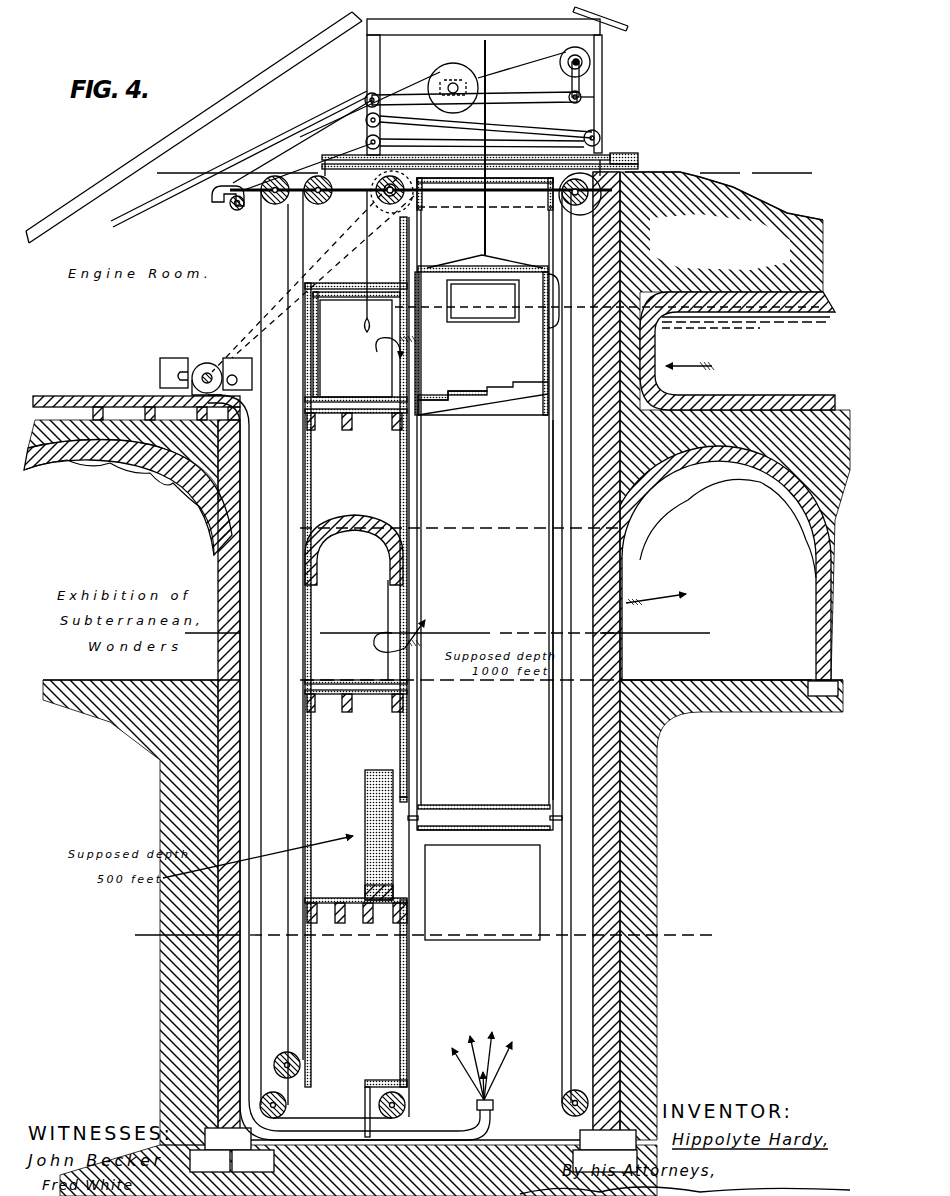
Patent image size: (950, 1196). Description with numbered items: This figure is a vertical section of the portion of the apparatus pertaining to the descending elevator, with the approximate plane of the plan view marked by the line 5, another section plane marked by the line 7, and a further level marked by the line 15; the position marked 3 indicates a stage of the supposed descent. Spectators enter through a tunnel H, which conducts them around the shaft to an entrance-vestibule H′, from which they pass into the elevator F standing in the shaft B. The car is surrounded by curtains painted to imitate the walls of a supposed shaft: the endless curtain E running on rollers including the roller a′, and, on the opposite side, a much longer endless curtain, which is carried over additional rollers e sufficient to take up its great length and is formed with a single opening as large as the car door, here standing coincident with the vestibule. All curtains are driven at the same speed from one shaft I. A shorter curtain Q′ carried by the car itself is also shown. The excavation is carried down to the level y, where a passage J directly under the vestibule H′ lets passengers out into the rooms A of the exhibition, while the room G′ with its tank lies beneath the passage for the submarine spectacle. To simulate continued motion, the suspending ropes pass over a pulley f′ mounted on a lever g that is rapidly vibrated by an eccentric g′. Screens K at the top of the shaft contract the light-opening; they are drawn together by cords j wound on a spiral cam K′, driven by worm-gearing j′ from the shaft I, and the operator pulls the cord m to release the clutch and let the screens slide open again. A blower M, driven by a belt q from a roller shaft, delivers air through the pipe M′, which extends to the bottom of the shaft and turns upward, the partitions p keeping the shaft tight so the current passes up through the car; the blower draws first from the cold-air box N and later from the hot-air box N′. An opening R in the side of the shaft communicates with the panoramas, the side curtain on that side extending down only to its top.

The rooms of the exhibition A is at (721, 656).
The tunnel H is at (737, 351).
The partitions or walls p is at (612, 978).
The section line 5 5 is at (484, 166).
The level line 7 is at (453, 632).
The level line 15 is at (420, 928).
The level y is at (717, 666).
The level line 3 is at (460, 641).
The pulley f′ is at (470, 80).
The lever g is at (471, 90).
The eccentric g′ is at (560, 62).
The worm-gearing j′ is at (479, 125).
The cords j is at (416, 131).
The screens K is at (392, 150).
The spiral winding-on cam K′ is at (232, 200).
The rollers e is at (332, 647).
The shaft I is at (380, 192).
The roller a′ is at (575, 1095).
The belt q is at (313, 275).
The cord or chain m is at (373, 261).
The entrance-vestibule H′ is at (360, 361).
The passage or vestibule J is at (365, 613).
The room or space G′ is at (356, 950).
The delivery-pipe M′ is at (243, 455).
The blower M is at (207, 363).
The cold-air box N is at (174, 364).
The hot-air box N′ is at (237, 365).
The elevator F is at (487, 335).
The curtain Q′ is at (607, 301).
The endless curtain E is at (540, 452).
The shaft B is at (460, 514).
The opening R is at (482, 892).